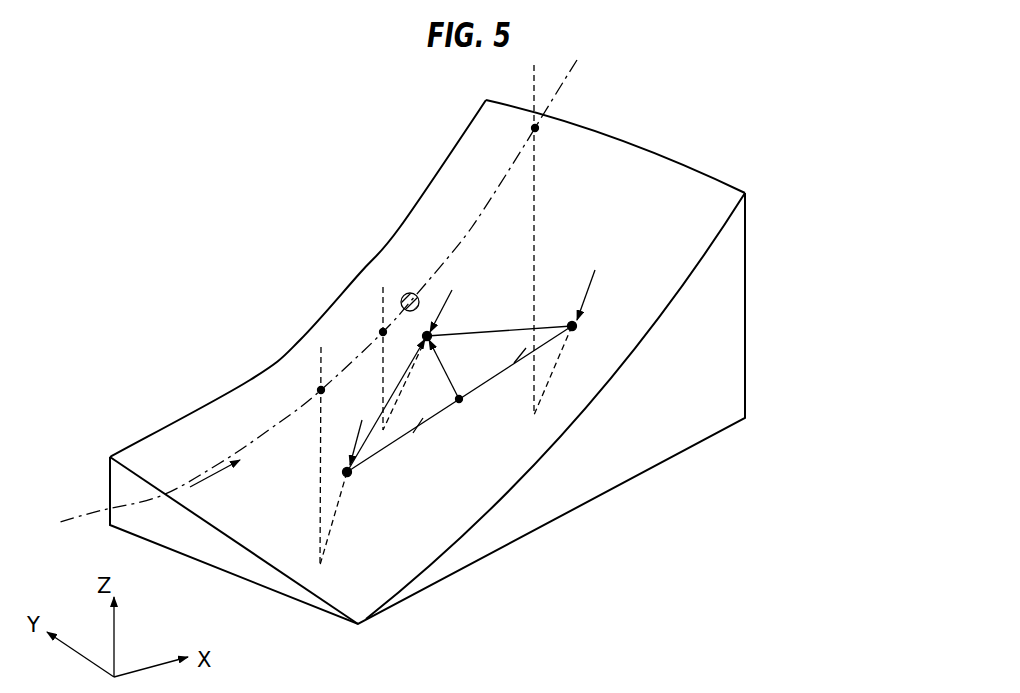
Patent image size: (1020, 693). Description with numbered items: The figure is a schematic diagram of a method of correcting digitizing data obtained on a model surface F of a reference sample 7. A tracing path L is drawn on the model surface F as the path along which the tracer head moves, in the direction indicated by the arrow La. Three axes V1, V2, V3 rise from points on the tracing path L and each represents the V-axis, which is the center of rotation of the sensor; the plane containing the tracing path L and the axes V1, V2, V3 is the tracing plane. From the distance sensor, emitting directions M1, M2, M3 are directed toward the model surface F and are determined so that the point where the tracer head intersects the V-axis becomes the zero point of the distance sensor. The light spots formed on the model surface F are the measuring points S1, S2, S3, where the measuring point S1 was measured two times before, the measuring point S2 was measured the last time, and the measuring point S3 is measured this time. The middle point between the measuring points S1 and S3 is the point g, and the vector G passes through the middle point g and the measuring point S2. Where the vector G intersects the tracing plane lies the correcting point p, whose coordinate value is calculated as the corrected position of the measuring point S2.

The reference sample 7 is at (720, 351).
The model surface F is at (672, 181).
The tracing path L is at (220, 463).
The arrow (tracing direction) La is at (203, 483).
The V-axis V1 is at (320, 366).
The V-axis V2 is at (382, 300).
The V-axis V3 is at (535, 176).
The correcting point p is at (412, 293).
The emitting direction M1 is at (353, 443).
The emitting direction M2 is at (450, 293).
The emitting direction M3 is at (588, 283).
The measuring point S1 is at (352, 475).
The measuring point S2 is at (432, 333).
The measuring point S3 is at (579, 327).
The vector G is at (448, 367).
The middle point g is at (461, 401).